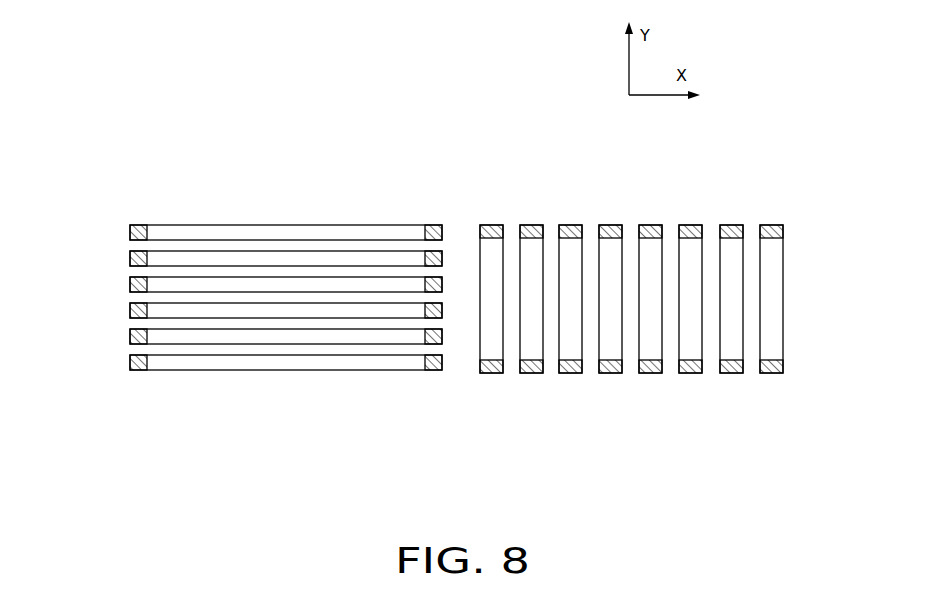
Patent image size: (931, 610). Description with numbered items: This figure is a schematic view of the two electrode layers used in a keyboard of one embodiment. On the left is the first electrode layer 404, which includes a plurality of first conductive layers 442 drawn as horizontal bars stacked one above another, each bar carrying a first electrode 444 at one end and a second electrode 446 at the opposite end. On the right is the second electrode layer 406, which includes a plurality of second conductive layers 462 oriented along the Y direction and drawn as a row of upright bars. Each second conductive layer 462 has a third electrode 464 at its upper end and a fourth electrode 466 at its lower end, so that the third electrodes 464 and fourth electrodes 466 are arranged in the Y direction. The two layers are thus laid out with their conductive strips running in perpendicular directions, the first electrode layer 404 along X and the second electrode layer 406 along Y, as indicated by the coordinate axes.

The first electrode layer 404 is at (270, 158).
The first conductive layer 442 is at (298, 225).
The first electrode 444 is at (133, 227).
The second electrode 446 is at (434, 228).
The second electrode layer 406 is at (628, 190).
The second conductive layer 462 is at (783, 305).
The third electrode 464 is at (730, 230).
The fourth electrode 466 is at (693, 368).